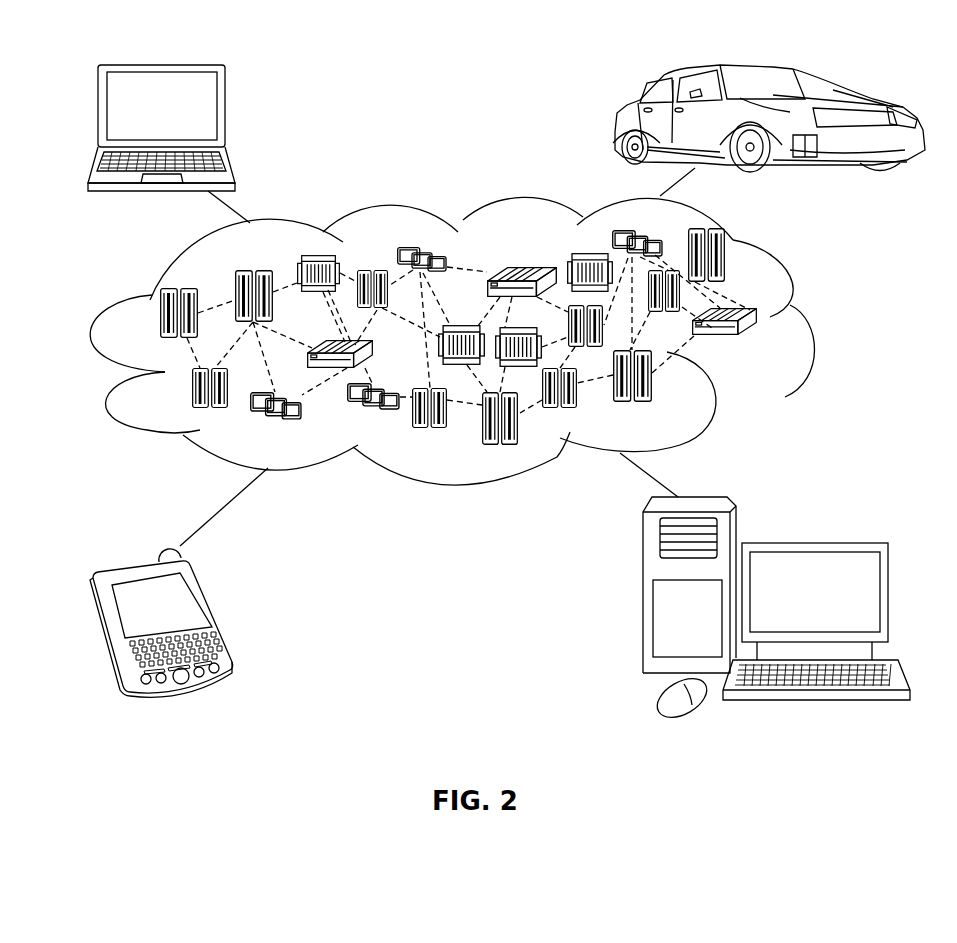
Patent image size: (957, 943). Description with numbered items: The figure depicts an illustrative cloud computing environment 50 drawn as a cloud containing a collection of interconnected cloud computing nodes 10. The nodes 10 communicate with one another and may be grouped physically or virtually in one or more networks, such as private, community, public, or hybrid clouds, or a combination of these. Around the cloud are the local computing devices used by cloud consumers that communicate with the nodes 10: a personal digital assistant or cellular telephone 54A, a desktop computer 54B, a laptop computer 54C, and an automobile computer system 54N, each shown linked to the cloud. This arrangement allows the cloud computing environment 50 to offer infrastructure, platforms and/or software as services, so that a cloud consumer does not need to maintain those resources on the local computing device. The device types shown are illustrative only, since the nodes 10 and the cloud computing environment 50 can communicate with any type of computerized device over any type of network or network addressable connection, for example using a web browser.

The cloud computing node 10 is at (770, 345).
The cloud computing environment 50 is at (477, 341).
The personal digital assistant or cellular telephone 54A is at (215, 615).
The desktop computer 54B is at (812, 543).
The laptop computer 54C is at (225, 112).
The automobile computer system 54N is at (616, 122).